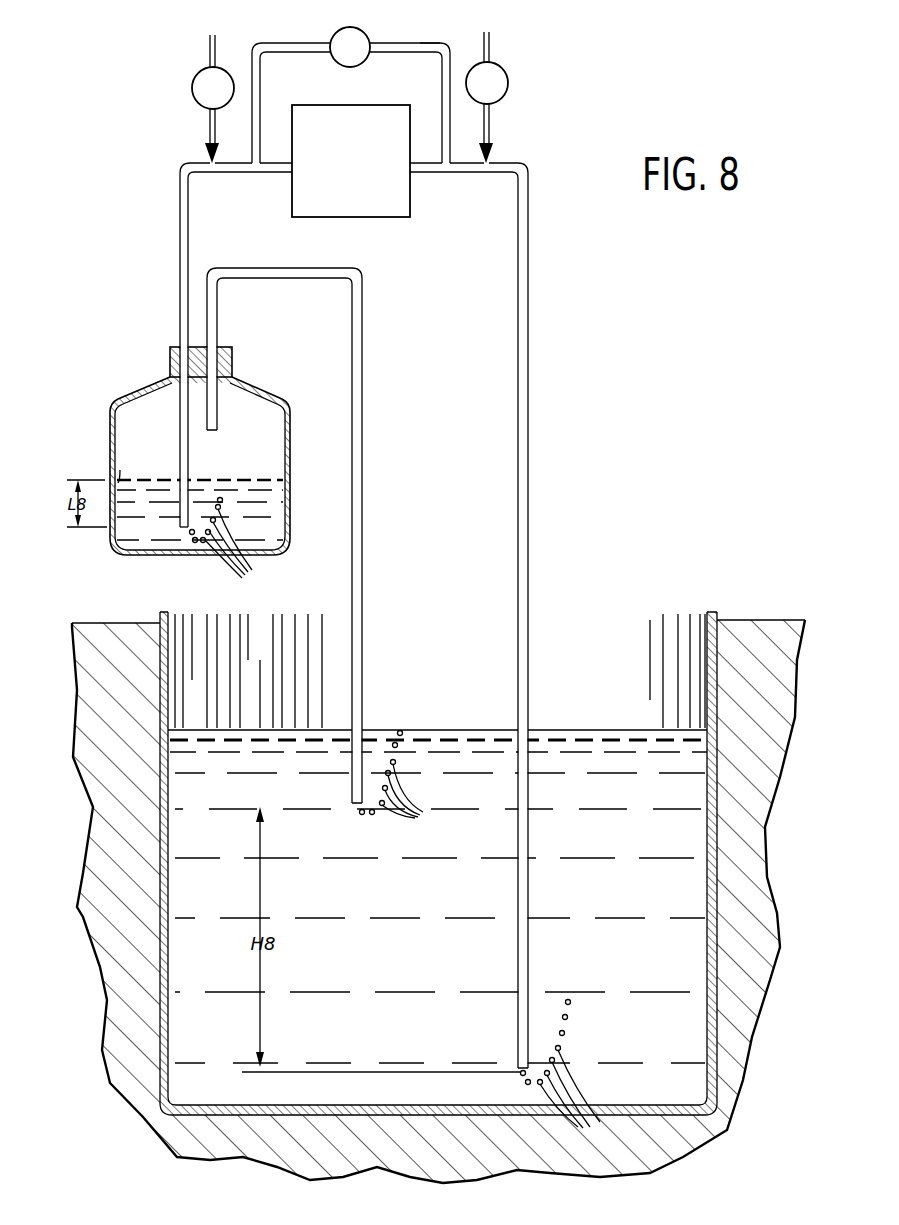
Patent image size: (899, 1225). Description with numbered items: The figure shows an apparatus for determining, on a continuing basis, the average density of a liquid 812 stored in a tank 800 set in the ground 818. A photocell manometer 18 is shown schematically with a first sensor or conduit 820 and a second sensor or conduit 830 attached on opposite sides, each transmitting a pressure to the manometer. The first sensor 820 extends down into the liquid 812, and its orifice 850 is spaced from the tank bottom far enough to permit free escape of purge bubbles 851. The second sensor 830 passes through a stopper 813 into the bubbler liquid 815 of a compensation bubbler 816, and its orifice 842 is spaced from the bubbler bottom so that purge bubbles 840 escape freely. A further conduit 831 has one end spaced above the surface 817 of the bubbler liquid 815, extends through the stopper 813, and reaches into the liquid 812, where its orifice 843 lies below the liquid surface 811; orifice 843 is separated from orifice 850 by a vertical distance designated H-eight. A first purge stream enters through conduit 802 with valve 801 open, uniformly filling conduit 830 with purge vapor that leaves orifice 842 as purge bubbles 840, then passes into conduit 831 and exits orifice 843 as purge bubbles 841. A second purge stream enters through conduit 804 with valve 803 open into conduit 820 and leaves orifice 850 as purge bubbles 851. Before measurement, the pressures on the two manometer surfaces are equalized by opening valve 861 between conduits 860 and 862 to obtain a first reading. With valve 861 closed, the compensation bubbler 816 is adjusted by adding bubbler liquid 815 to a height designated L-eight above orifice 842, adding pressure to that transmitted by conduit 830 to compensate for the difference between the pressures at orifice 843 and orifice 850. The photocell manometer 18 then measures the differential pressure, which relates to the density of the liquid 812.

The photocell manometer 18 is at (337, 163).
The tank 800 is at (720, 611).
The valve 801 is at (192, 82).
The conduit 802 is at (207, 123).
The valve 803 is at (506, 70).
The conduit 804 is at (493, 122).
The surface of liquid 811 is at (293, 733).
The liquid 812 is at (424, 978).
The stopper 813 is at (176, 345).
The bubbler liquid 815 is at (231, 524).
The compensation bubbler 816 is at (115, 380).
The surface of bubbler liquid 817 is at (147, 478).
The ground 818 is at (92, 724).
The first sensor or conduit 820 is at (529, 353).
The second sensor or conduit 830 is at (180, 223).
The conduit 831 is at (363, 364).
The purge bubbles 840 is at (250, 545).
The purge bubbles 841 is at (416, 785).
The orifice 842 is at (190, 537).
The orifice 843 is at (353, 810).
The orifice 850 is at (522, 1074).
The purge bubbles 851 is at (578, 1100).
The conduit 860 is at (313, 37).
The valve 861 is at (363, 32).
The conduit 862 is at (424, 43).